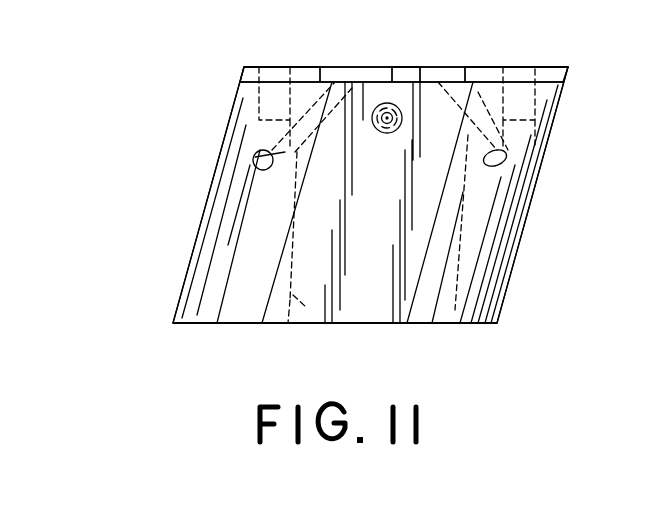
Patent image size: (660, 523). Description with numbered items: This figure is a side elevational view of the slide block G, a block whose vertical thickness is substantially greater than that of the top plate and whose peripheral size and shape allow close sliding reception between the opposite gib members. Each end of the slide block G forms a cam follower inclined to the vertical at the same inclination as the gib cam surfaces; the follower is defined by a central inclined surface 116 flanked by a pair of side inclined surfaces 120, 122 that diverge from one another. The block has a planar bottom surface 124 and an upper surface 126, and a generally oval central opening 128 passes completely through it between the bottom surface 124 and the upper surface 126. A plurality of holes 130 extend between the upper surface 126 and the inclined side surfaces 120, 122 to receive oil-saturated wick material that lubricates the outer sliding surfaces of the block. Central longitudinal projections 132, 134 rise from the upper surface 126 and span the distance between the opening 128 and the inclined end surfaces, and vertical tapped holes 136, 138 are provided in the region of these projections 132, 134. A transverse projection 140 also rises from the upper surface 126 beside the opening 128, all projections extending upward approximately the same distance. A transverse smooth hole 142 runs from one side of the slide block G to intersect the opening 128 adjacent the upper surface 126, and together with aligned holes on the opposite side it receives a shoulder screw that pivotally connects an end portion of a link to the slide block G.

The slide block G is at (203, 208).
The central inclined surface 116 is at (230, 118).
The side inclined surface 120 is at (223, 255).
The side inclined surface 122 is at (503, 236).
The bottom surface 124 is at (219, 325).
The upper surface 126 is at (365, 82).
The central opening 128 is at (312, 312).
The holes 130 is at (253, 162).
The central longitudinal projection 132 is at (240, 68).
The central longitudinal projection 134 is at (552, 73).
The vertical tapped hole 136 is at (268, 76).
The vertical tapped hole 138 is at (505, 78).
The transverse projection 140 is at (410, 67).
The transverse smooth hole 142 is at (383, 133).